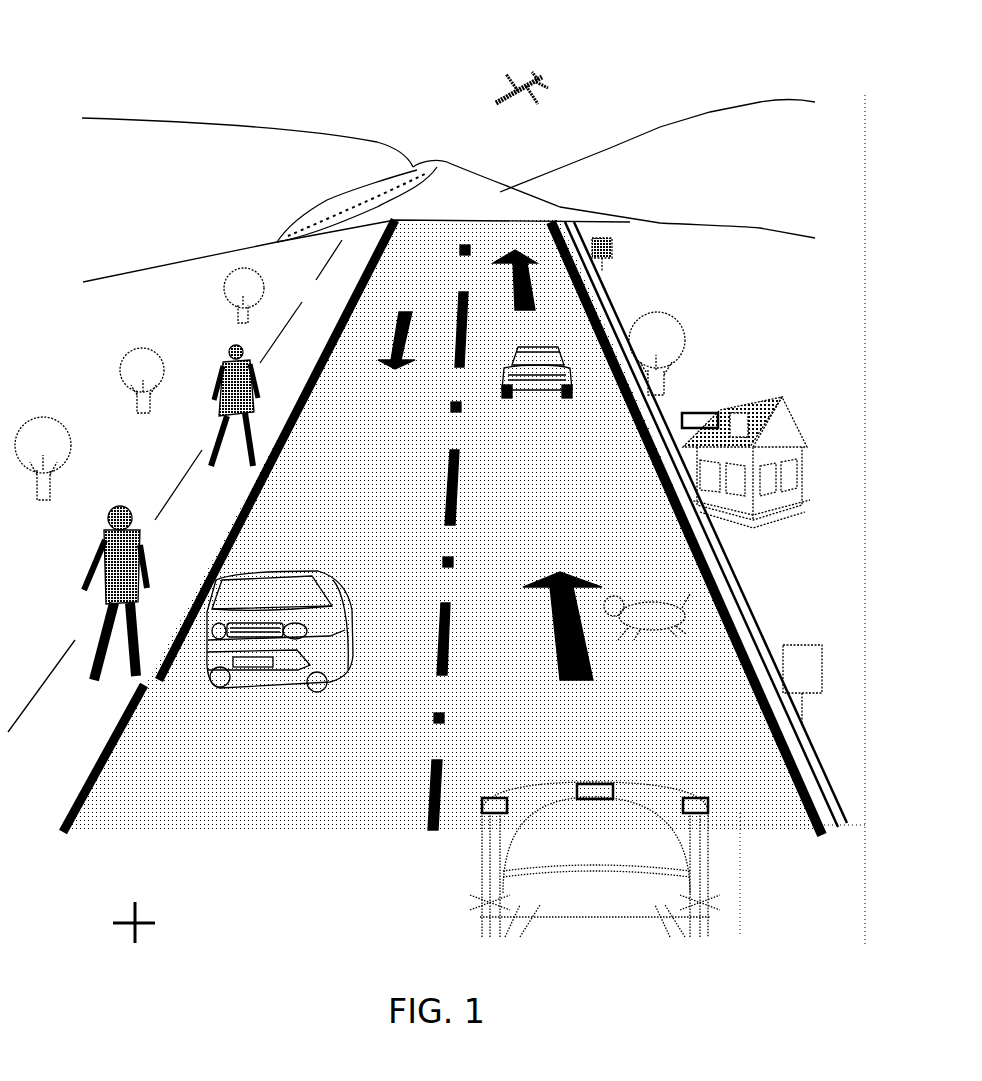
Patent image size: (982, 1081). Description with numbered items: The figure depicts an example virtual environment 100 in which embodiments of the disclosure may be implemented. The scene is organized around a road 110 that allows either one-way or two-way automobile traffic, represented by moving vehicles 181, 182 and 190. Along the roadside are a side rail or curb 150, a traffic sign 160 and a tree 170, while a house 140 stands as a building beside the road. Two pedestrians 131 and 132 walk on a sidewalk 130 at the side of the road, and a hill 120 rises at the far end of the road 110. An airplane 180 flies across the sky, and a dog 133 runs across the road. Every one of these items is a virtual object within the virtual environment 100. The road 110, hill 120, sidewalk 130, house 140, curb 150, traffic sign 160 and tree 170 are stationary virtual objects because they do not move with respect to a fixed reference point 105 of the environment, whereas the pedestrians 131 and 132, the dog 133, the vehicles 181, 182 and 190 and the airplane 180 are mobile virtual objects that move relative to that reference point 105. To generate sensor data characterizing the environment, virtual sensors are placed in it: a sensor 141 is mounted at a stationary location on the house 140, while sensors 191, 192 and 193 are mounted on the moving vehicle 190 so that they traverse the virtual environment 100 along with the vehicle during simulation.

The virtual environment 100 is at (174, 48).
The fixed reference point 105 is at (150, 939).
The road 110 is at (204, 835).
The hill 120 is at (772, 140).
The sidewalk 130 is at (82, 732).
The pedestrian 131 is at (64, 557).
The pedestrian 132 is at (194, 414).
The dog 133 is at (647, 657).
The house 140 is at (814, 414).
The sensor 141 is at (697, 405).
The side rail or curb 150 is at (845, 840).
The traffic sign 160 is at (831, 659).
The tree 170 is at (21, 412).
The airplane 180 is at (505, 120).
The vehicle 181 is at (270, 690).
The vehicle 182 is at (530, 410).
The vehicle 190 is at (612, 854).
The sensor 191 is at (491, 791).
The sensor 192 is at (592, 777).
The sensor 193 is at (701, 789).